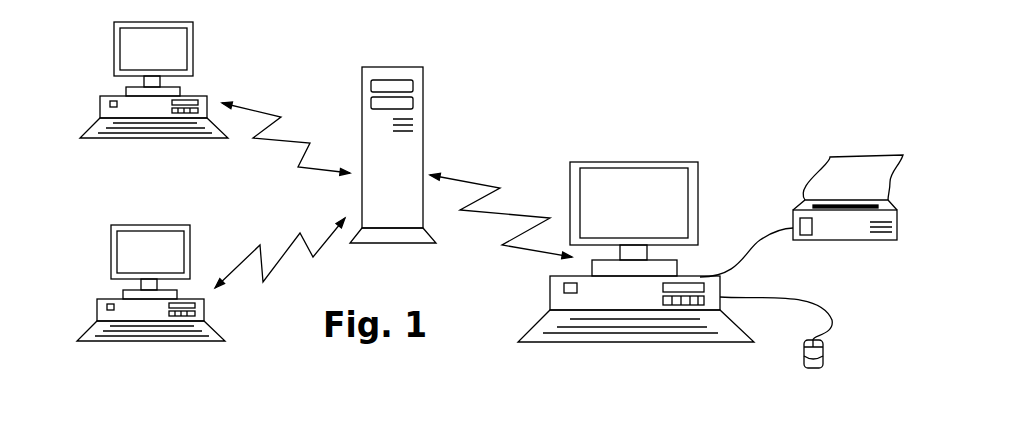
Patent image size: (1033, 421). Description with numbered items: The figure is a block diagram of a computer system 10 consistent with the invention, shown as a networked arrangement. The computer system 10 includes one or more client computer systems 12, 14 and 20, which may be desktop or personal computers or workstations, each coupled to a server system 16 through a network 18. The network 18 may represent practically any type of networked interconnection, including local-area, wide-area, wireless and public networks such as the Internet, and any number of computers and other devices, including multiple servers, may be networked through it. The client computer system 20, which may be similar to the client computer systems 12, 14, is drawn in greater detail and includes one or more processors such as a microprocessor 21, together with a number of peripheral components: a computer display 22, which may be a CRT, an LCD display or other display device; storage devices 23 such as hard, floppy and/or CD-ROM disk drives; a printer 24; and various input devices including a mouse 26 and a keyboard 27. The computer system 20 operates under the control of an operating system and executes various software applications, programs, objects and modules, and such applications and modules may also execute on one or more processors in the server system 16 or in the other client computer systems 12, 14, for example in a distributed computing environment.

The computer system 10 is at (557, 75).
The client computer system 12 is at (115, 38).
The client computer system 14 is at (112, 229).
The server system 16 is at (378, 67).
The network 18 is at (290, 143).
The computer system 20 is at (688, 162).
The microprocessor 21 is at (605, 298).
The computer display 22 is at (607, 165).
The storage devices 23 is at (680, 305).
The printer 24 is at (810, 208).
The mouse 26 is at (820, 358).
The keyboard 27 is at (537, 339).